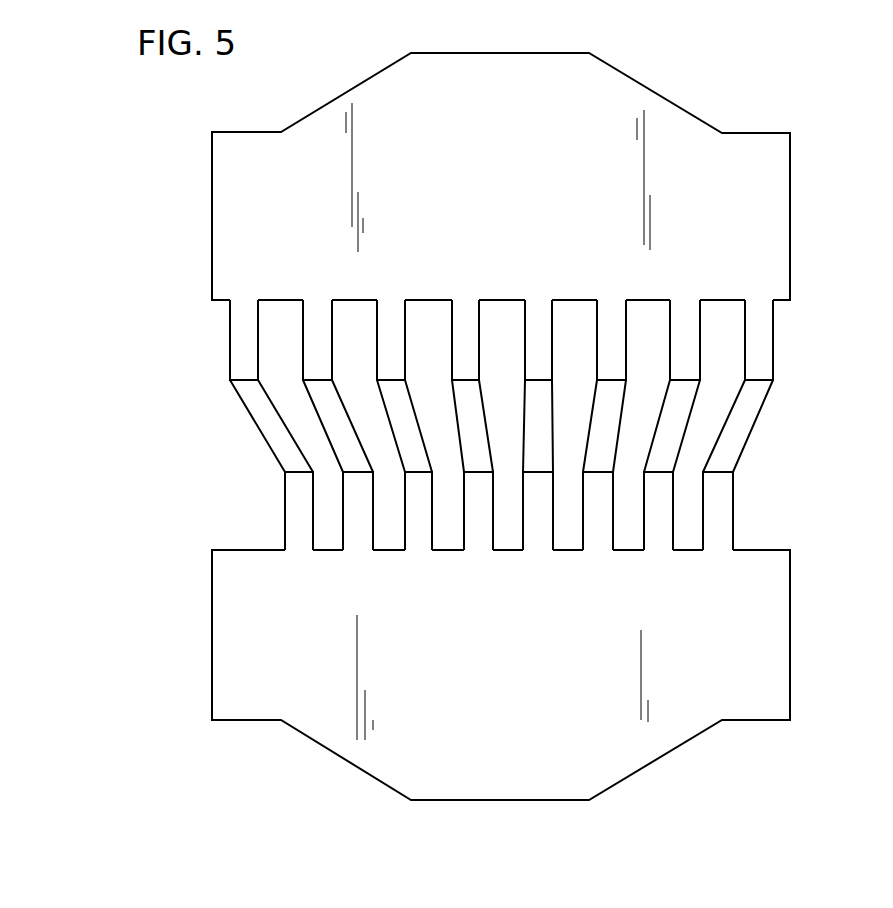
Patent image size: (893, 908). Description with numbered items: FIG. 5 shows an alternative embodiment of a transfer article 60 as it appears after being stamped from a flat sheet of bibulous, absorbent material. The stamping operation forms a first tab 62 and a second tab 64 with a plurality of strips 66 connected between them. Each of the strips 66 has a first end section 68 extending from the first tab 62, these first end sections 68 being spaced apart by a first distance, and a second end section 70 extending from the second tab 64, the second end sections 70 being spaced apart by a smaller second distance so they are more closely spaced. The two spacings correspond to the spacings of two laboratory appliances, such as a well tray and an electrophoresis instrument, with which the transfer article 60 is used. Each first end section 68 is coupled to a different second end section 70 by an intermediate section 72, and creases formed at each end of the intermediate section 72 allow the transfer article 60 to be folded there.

The transfer article 60 is at (170, 471).
The first tab 62 is at (505, 147).
The second tab 64 is at (516, 729).
The strips 66 is at (458, 361).
The first end section 68 is at (387, 310).
The second end section 70 is at (423, 523).
The intermediate section 72 is at (458, 403).